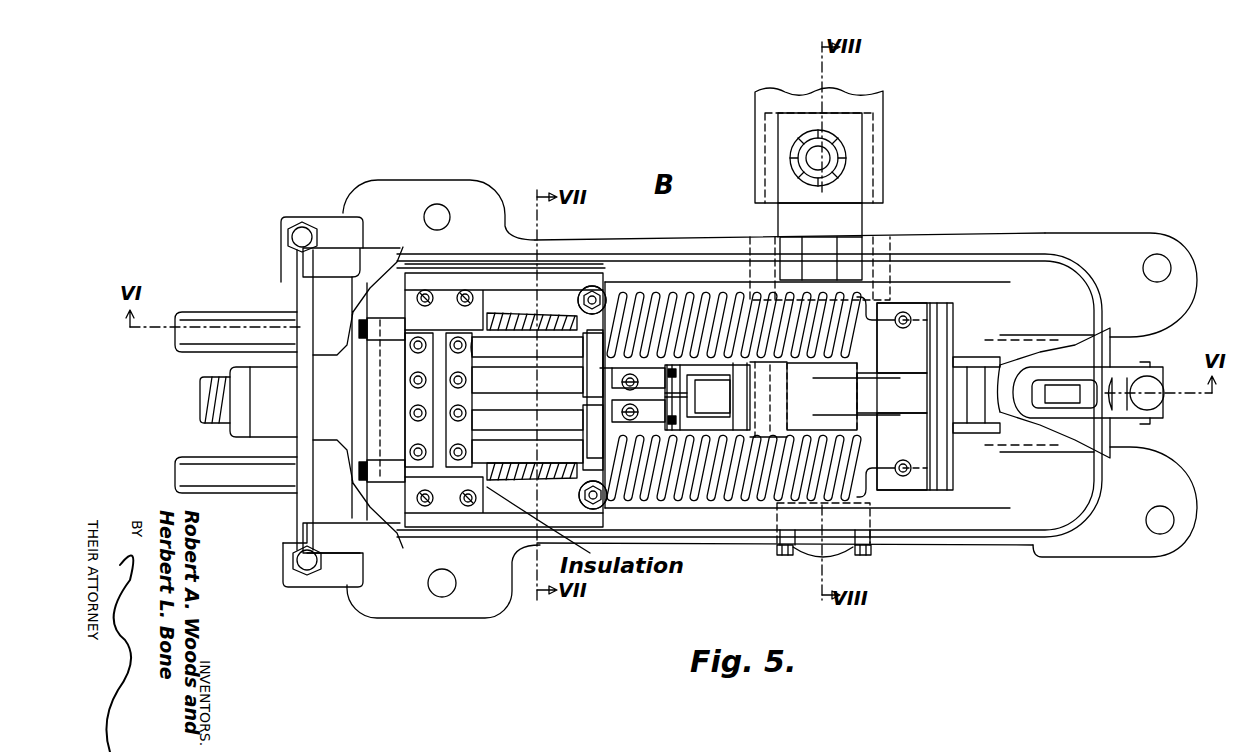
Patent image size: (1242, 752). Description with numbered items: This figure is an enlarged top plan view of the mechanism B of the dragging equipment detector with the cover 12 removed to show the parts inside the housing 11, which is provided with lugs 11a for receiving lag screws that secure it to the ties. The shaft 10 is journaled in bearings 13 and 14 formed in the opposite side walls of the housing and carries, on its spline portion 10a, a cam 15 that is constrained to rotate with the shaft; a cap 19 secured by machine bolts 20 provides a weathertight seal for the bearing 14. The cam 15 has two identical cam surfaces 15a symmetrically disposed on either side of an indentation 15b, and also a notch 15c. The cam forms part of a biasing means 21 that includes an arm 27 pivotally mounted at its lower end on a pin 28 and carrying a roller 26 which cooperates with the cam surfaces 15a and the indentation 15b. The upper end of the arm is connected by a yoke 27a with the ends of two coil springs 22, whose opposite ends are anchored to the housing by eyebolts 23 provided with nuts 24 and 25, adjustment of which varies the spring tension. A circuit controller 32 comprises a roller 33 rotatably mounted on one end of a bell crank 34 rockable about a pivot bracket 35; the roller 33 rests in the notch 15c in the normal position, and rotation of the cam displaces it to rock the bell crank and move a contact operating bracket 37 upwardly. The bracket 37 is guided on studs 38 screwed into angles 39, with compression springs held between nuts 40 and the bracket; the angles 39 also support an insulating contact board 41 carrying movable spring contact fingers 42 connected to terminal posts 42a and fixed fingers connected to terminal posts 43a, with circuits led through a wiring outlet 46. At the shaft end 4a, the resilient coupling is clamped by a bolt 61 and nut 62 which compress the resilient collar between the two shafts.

The shaft end 4a is at (880, 160).
The shaft 10 is at (860, 225).
The spline portion 10a is at (770, 400).
The housing 11 is at (984, 530).
The lugs 11a is at (468, 195).
The cover 12 is at (330, 262).
The bearing 13 is at (770, 262).
The bearing 14 is at (772, 515).
The cam 15 is at (843, 396).
The cam surfaces 15a is at (892, 393).
The indentation 15b is at (902, 396).
The notch 15c is at (768, 399).
The cap 19 is at (830, 550).
The machine bolts 20 is at (785, 557).
The biasing means 21 is at (714, 512).
The coil springs 22 is at (672, 300).
The eyebolts 23 is at (372, 330).
The nut 24 is at (340, 325).
The nut 25 is at (258, 318).
The roller 26 is at (957, 433).
The arm 27 is at (1030, 415).
The yoke 27a is at (957, 308).
The pin 28 is at (990, 425).
The circuit controller 32 is at (520, 313).
The roller 33 is at (740, 407).
The bell crank 34 is at (618, 300).
The pivot bracket 35 is at (708, 396).
The contact operating bracket 37 is at (532, 390).
The studs 38 is at (592, 286).
The angles 39 is at (462, 280).
The nuts 40 is at (580, 298).
The insulating contact board 41 is at (408, 503).
The movable spring contact fingers 42 is at (537, 400).
The terminal posts 42a is at (475, 410).
The terminal posts 43a is at (418, 345).
The wiring outlet 46 is at (200, 397).
The bolt 61 is at (800, 150).
The nut 62 is at (800, 172).